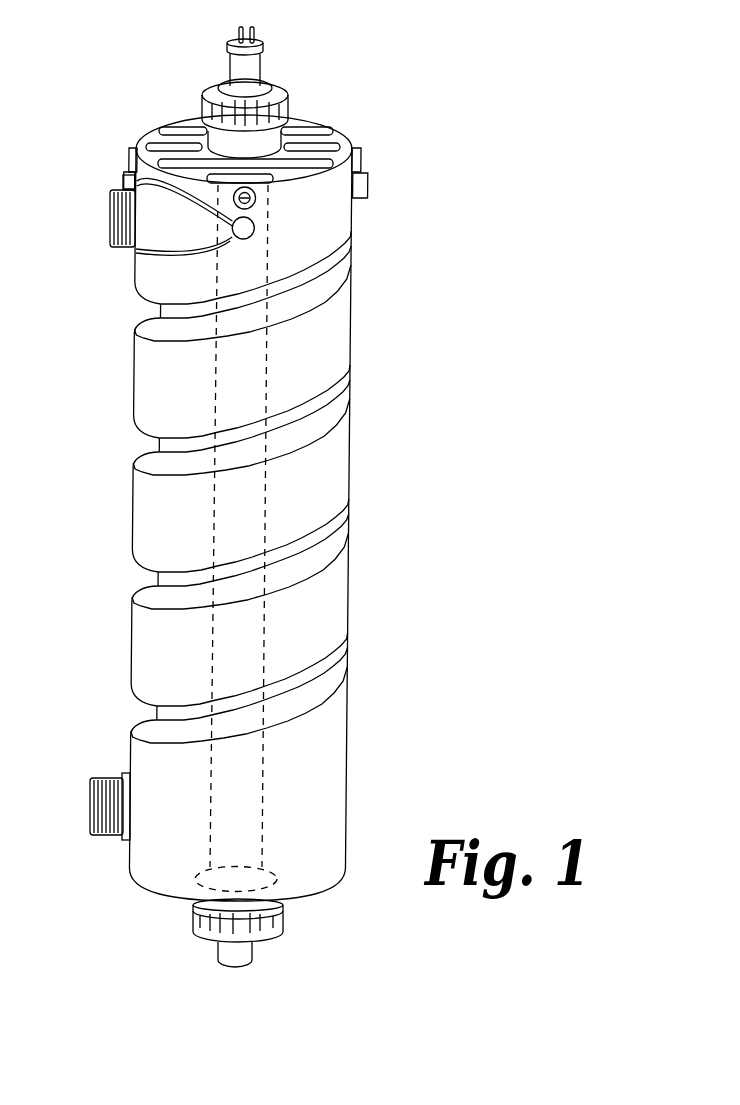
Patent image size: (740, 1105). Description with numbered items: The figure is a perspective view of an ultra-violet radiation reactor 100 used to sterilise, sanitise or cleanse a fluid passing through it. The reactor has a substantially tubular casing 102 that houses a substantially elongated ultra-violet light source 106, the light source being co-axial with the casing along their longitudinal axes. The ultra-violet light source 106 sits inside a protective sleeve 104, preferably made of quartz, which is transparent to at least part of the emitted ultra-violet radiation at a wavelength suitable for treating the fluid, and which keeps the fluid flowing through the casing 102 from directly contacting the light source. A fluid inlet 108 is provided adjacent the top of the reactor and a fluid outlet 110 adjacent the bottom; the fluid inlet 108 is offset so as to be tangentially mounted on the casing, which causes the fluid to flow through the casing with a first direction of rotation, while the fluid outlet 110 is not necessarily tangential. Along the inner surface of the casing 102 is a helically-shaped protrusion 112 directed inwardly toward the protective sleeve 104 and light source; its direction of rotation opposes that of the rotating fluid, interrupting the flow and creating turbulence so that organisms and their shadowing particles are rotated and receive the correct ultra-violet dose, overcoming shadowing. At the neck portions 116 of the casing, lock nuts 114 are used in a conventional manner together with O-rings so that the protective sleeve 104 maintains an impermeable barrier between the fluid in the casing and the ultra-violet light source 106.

The ultra-violet radiation reactor 100 is at (393, 93).
The tubular casing 102 is at (165, 392).
The protective sleeve 104 is at (247, 512).
The ultra-violet light source 106 is at (252, 68).
The fluid inlet 108 is at (85, 215).
The fluid outlet 110 is at (38, 803).
The helically-shaped protrusion 112 is at (293, 277).
The lock nuts 114 is at (272, 112).
The neck portions 116 is at (353, 143).